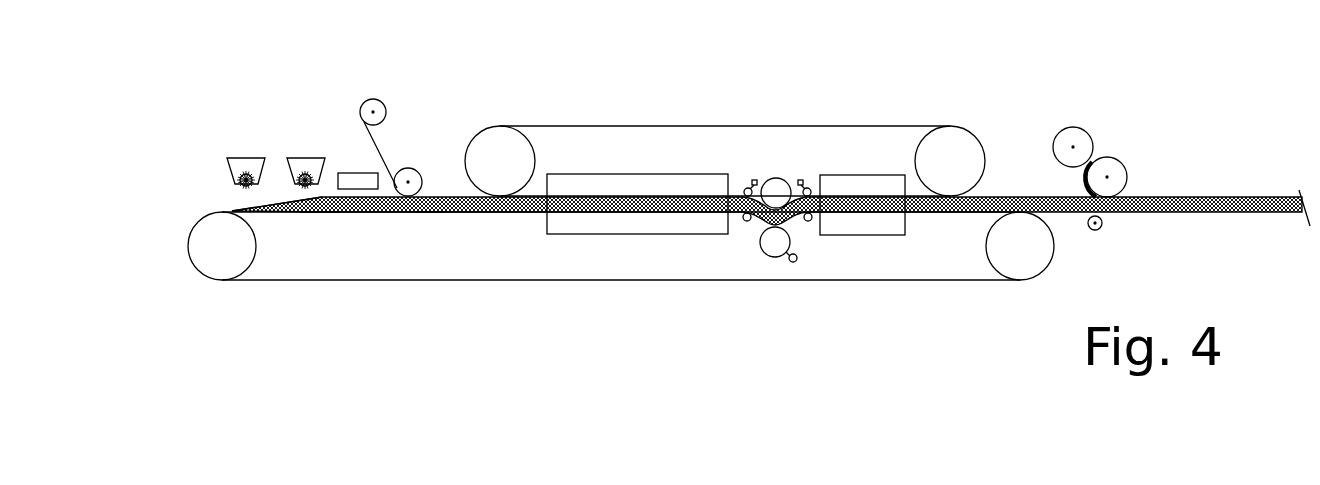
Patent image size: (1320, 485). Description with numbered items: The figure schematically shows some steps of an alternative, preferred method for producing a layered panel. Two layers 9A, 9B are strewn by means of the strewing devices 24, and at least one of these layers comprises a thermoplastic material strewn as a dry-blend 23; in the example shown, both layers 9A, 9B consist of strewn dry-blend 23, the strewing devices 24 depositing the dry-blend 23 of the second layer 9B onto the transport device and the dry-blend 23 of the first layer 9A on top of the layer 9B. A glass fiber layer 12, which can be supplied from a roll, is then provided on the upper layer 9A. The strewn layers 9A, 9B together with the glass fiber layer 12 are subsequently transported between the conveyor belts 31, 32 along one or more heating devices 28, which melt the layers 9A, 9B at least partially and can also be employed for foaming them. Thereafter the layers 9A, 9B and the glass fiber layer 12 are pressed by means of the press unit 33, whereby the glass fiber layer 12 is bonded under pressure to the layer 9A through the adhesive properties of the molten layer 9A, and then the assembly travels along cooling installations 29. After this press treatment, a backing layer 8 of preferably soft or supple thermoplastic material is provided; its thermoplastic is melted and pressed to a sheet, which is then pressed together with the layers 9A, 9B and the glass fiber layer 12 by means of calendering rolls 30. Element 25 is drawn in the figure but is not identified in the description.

The backing layer 8 is at (1160, 198).
The first layer 9A is at (407, 211).
The second layer 9B is at (428, 211).
The glass fiber layer 12 is at (383, 150).
The dry-blend 23 is at (323, 213).
The strewing devices 24 is at (240, 142).
The spread material layer 25 is at (283, 212).
The heating devices 28 is at (353, 178).
The cooling installations 29 is at (872, 228).
The calendering rolls 30 is at (1100, 229).
The conveyor belt 31 is at (556, 126).
The conveyor belt 32 is at (620, 281).
The press unit 33 is at (790, 165).